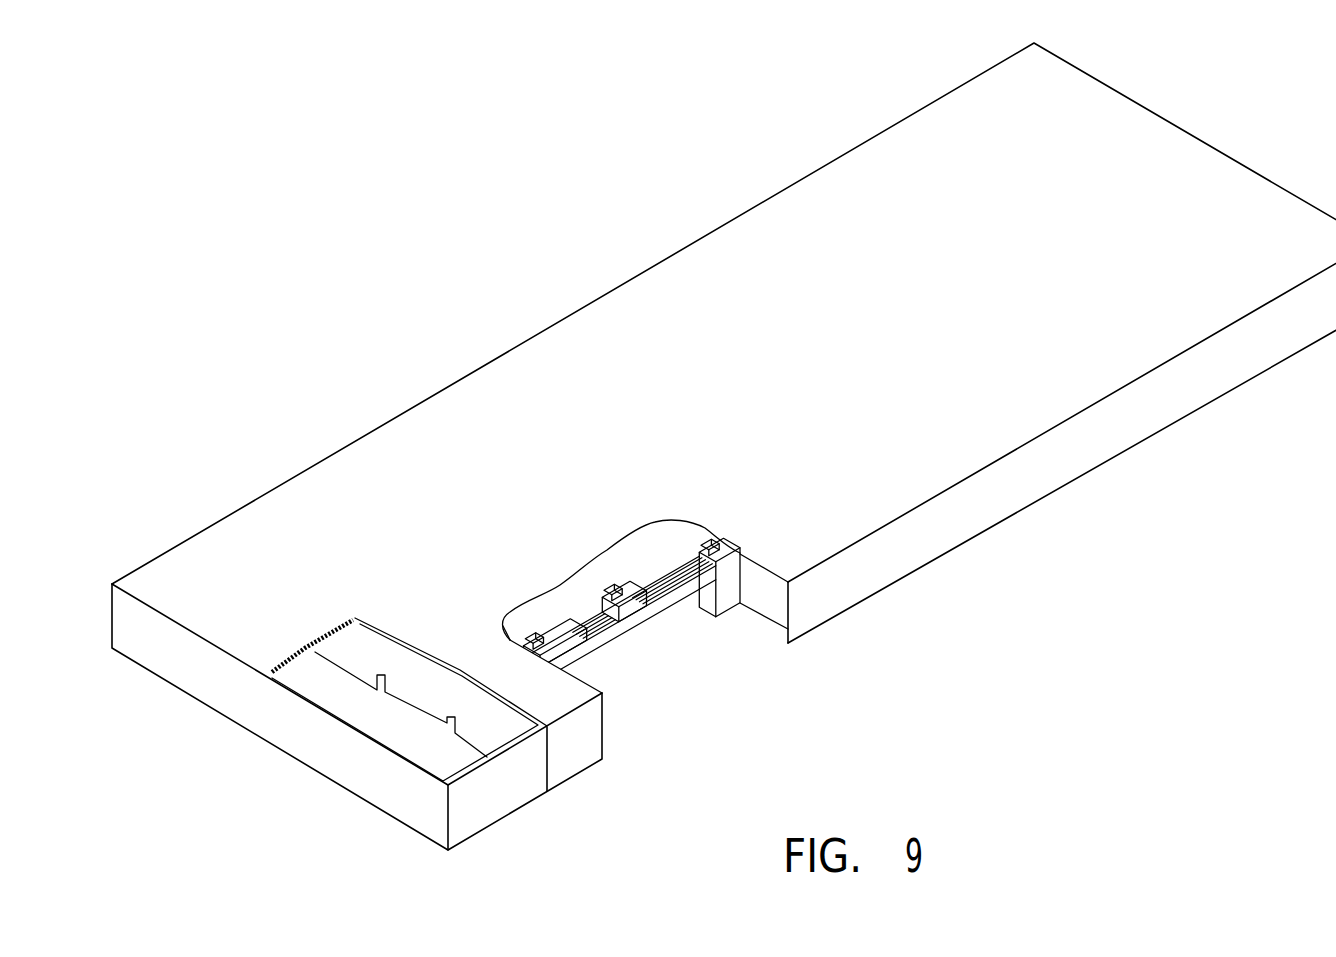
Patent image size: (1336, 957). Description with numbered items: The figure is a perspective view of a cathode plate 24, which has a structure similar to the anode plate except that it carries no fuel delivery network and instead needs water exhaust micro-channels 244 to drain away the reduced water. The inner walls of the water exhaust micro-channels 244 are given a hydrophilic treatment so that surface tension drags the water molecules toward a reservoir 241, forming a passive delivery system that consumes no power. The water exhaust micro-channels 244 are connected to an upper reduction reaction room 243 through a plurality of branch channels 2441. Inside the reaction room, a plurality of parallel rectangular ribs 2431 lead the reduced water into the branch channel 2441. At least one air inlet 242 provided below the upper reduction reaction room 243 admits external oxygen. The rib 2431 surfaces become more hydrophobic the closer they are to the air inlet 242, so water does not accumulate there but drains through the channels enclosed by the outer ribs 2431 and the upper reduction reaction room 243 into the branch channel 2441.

The cathode plate 24 is at (530, 192).
The reservoir 241 is at (386, 714).
The air inlet 242 is at (737, 615).
The upper reduction reaction room 243 is at (620, 655).
The rectangular rib 2431 is at (638, 618).
The water exhaust micro-channel 244 is at (642, 560).
The branch channel 2441 is at (547, 630).